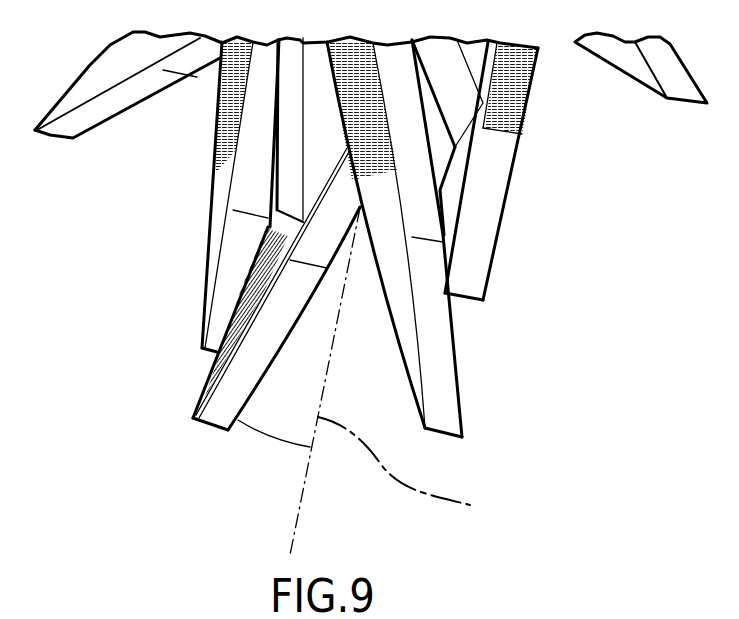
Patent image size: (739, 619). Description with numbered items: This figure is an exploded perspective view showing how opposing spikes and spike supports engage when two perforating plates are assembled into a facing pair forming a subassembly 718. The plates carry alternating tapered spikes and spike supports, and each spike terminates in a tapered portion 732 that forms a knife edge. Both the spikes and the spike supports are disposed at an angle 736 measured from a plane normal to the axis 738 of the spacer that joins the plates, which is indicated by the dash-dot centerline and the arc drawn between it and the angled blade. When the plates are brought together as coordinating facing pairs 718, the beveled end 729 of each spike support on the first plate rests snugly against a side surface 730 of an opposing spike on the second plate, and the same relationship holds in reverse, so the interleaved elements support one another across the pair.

The subassembly 718 is at (533, 261).
The beveled end 729 is at (290, 192).
The side surface 730 is at (260, 288).
The tapered portion 732 is at (200, 402).
The angle 736 is at (268, 433).
The axis 738 is at (401, 381).